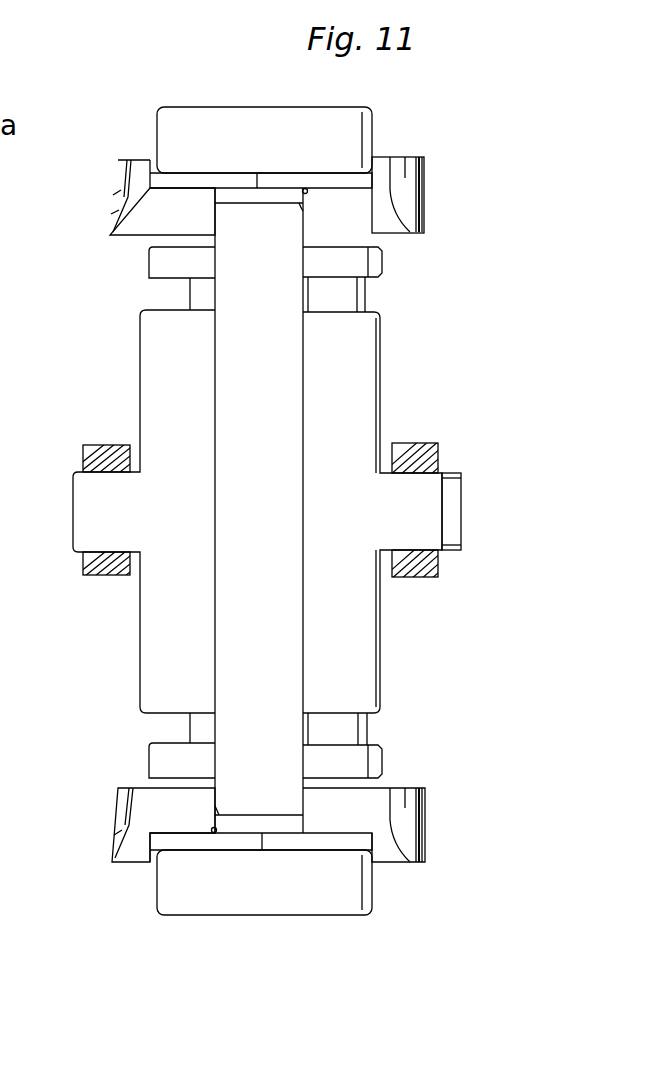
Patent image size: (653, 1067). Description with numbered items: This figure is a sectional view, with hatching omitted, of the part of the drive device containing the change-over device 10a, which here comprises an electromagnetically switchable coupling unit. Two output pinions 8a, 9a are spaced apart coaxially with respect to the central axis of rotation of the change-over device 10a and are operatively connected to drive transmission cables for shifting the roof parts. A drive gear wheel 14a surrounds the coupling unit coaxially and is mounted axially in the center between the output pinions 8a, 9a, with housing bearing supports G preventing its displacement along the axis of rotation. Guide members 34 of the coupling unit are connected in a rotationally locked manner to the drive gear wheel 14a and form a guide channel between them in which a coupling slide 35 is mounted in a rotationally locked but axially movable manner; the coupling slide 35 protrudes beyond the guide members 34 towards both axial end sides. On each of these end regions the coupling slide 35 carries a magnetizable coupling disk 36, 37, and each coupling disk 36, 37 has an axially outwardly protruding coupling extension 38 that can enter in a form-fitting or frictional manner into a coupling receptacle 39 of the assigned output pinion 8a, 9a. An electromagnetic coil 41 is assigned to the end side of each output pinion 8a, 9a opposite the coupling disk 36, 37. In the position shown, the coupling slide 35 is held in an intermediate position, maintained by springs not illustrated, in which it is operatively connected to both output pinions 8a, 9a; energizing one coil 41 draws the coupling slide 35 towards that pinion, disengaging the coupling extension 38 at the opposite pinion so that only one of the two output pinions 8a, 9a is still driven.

The electromagnetic coil 41 is at (276, 151).
The output pinion 9a is at (403, 173).
The change-over device 10a is at (85, 310).
The coupling receptacle 39 is at (307, 194).
The coupling extension 38 is at (300, 212).
The coupling disk 36 is at (355, 263).
The coupling disk 37 is at (355, 763).
The guide member 34 is at (157, 388).
The drive gear wheel 14a is at (450, 507).
The housing bearing support G is at (83, 448).
The coupling slide 35 is at (268, 497).
The output pinion 8a is at (148, 813).